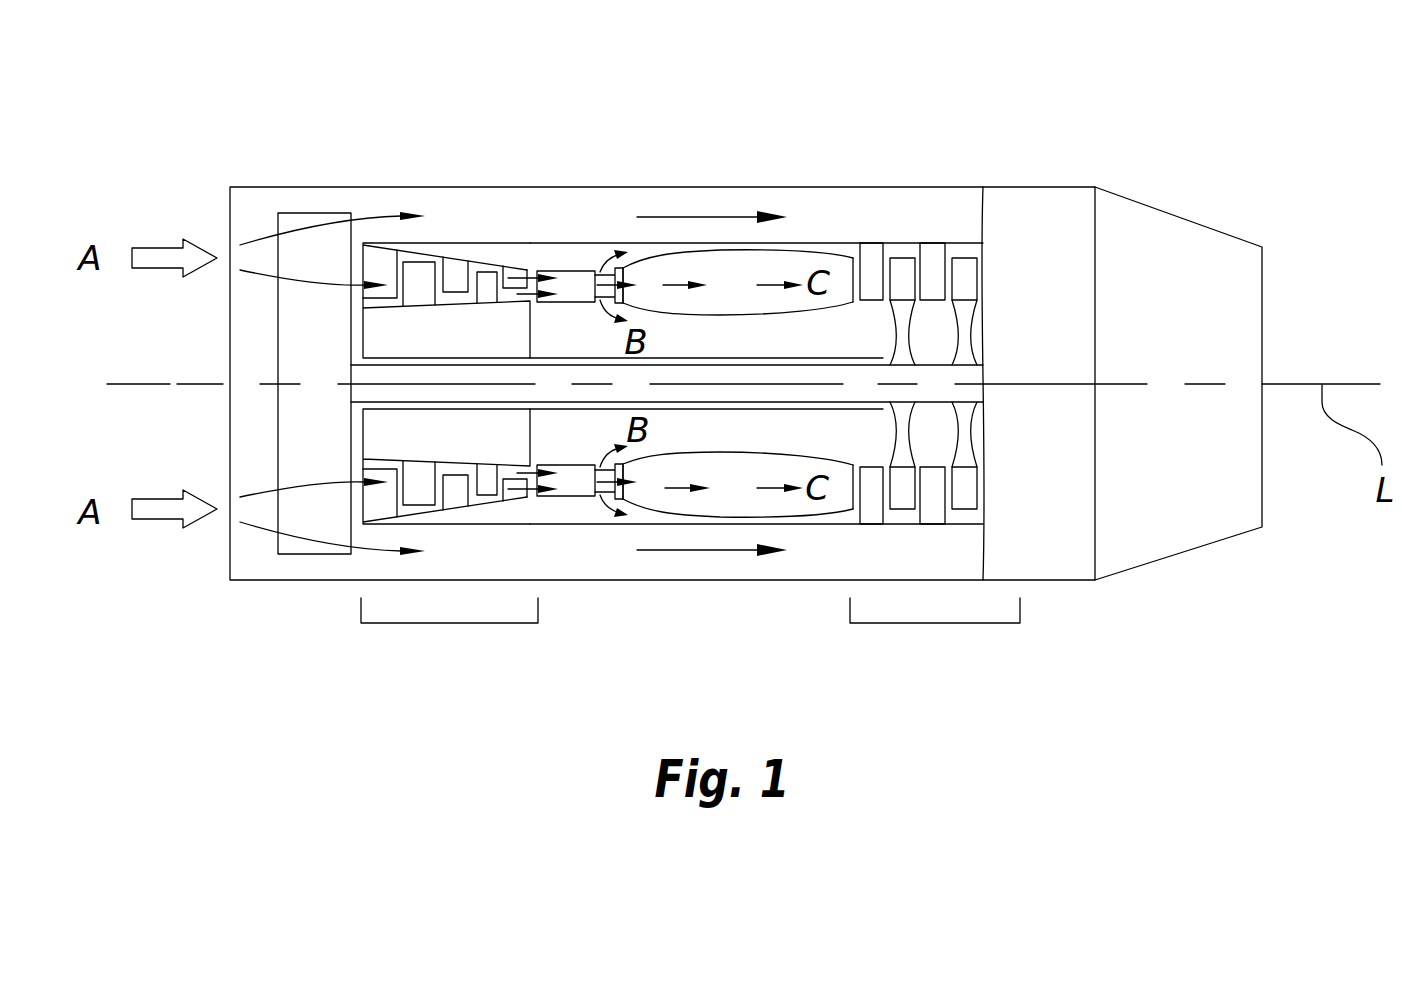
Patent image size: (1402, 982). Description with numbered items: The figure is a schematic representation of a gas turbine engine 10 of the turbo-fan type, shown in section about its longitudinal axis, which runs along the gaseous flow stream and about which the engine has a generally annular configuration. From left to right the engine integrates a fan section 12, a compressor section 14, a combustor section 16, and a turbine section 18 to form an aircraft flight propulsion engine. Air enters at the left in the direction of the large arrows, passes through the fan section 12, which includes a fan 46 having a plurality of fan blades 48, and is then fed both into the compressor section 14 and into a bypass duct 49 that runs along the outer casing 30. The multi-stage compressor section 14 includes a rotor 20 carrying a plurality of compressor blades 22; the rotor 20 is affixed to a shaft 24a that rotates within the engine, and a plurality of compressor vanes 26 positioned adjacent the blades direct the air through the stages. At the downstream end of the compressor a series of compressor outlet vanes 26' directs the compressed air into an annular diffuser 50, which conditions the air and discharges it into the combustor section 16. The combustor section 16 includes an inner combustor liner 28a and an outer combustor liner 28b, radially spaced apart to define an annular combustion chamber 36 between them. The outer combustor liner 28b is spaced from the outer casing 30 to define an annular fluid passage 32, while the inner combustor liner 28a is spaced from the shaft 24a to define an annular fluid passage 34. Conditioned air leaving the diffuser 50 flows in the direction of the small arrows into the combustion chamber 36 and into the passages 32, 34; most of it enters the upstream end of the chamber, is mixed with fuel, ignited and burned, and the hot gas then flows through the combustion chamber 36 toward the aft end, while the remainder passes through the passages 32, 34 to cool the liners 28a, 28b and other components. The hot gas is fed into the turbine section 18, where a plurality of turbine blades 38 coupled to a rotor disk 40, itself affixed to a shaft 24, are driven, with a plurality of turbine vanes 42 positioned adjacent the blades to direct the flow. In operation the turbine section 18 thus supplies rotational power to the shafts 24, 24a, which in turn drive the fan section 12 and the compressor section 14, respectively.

The gas turbine engine 10 is at (942, 107).
The fan section 12 is at (300, 566).
The compressor section 14 is at (453, 634).
The combustor section 16 is at (801, 536).
The turbine section 18 is at (1001, 636).
The rotor 20 is at (390, 345).
The compressor blades 22 is at (490, 275).
The shaft 24 is at (702, 403).
The shaft 24a is at (663, 358).
The compressor vanes 26 is at (403, 310).
The compressor outlet vanes 26' is at (494, 286).
The inner combustor liner 28a is at (803, 314).
The outer combustor liner 28b is at (660, 260).
The outer casing 30 is at (740, 243).
The annular fluid passage 32 is at (645, 255).
The annular fluid passage 34 is at (740, 352).
The combustion chamber 36 is at (712, 300).
The turbine blades 38 is at (900, 500).
The rotor disk 40 is at (902, 440).
The turbine vanes 42 is at (930, 252).
The fan 46 is at (278, 423).
The fan blades 48 is at (300, 262).
The bypass duct 49 is at (491, 228).
The diffuser 50 is at (570, 277).